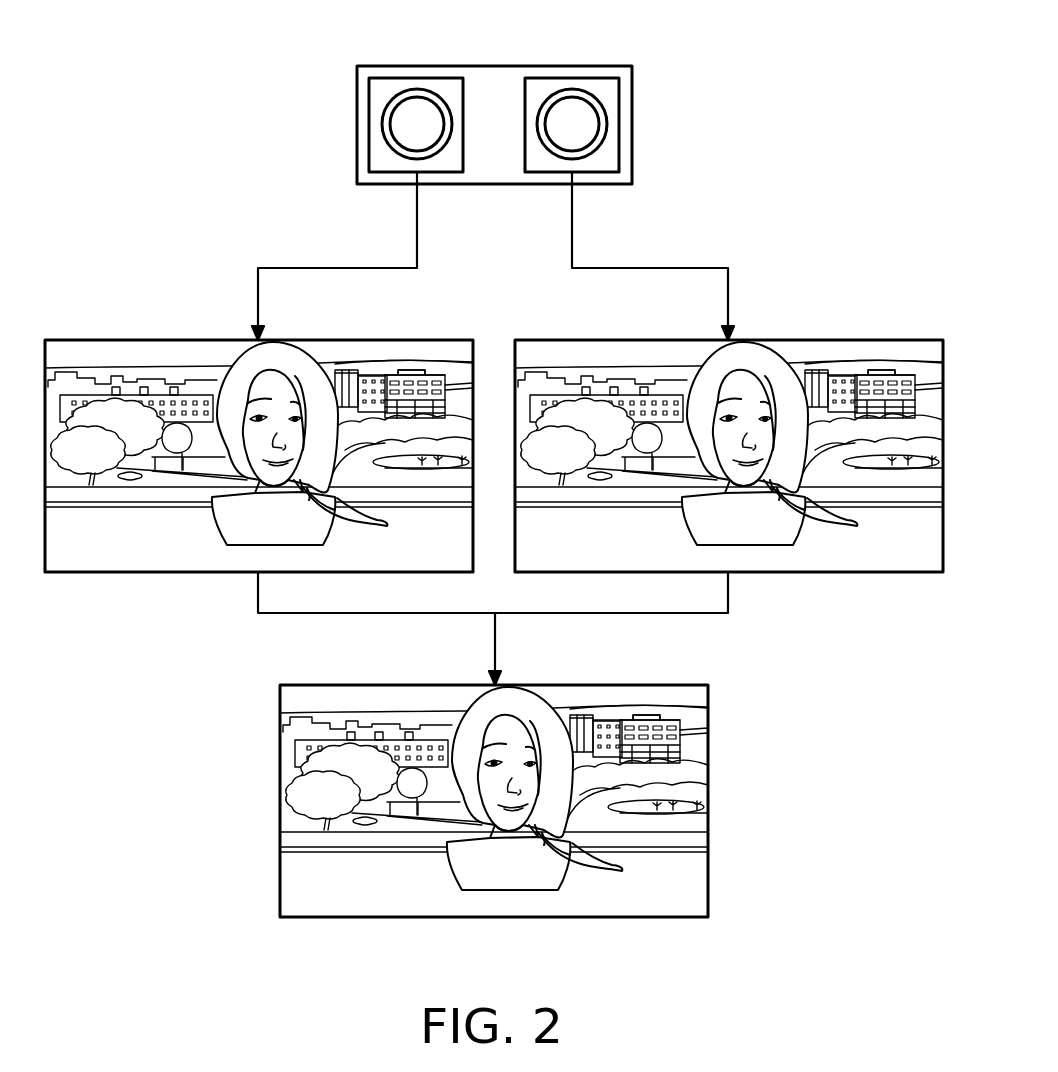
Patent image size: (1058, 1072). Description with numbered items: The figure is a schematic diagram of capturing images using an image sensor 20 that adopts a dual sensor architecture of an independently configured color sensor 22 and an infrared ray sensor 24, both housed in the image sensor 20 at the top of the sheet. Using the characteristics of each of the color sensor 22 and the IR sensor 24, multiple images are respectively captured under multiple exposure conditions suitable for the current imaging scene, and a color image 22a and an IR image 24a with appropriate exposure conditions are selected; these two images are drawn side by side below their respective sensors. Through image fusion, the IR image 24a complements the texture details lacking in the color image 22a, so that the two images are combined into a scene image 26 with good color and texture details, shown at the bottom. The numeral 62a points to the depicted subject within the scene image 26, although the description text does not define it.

The image sensor 20 is at (580, 64).
The color sensor 22 is at (403, 123).
The infrared ray (IR) sensor 24 is at (585, 123).
The color image 22a is at (420, 340).
The IR image 24a is at (890, 340).
The scene image 26 is at (495, 772).
The object in merged image 62a is at (534, 758).